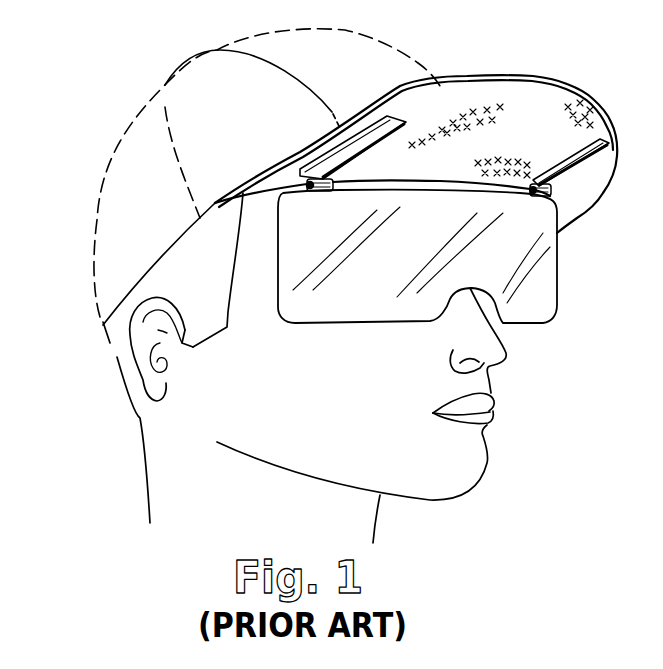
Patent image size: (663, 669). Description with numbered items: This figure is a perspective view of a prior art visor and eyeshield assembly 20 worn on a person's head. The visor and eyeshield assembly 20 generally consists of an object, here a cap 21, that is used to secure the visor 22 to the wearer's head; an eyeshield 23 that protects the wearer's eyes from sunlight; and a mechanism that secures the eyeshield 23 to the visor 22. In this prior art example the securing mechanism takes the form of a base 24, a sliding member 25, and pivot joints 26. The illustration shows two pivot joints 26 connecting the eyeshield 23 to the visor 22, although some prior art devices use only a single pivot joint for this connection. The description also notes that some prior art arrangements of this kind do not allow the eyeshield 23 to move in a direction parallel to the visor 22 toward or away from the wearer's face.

The visor and eyeshield assembly 20 is at (345, 165).
The cap 21 is at (417, 53).
The visor 22 is at (540, 75).
The eyeshield 23 is at (532, 300).
The base 24 is at (398, 117).
The sliding member 25 is at (353, 150).
The pivot joints 26 is at (320, 194).